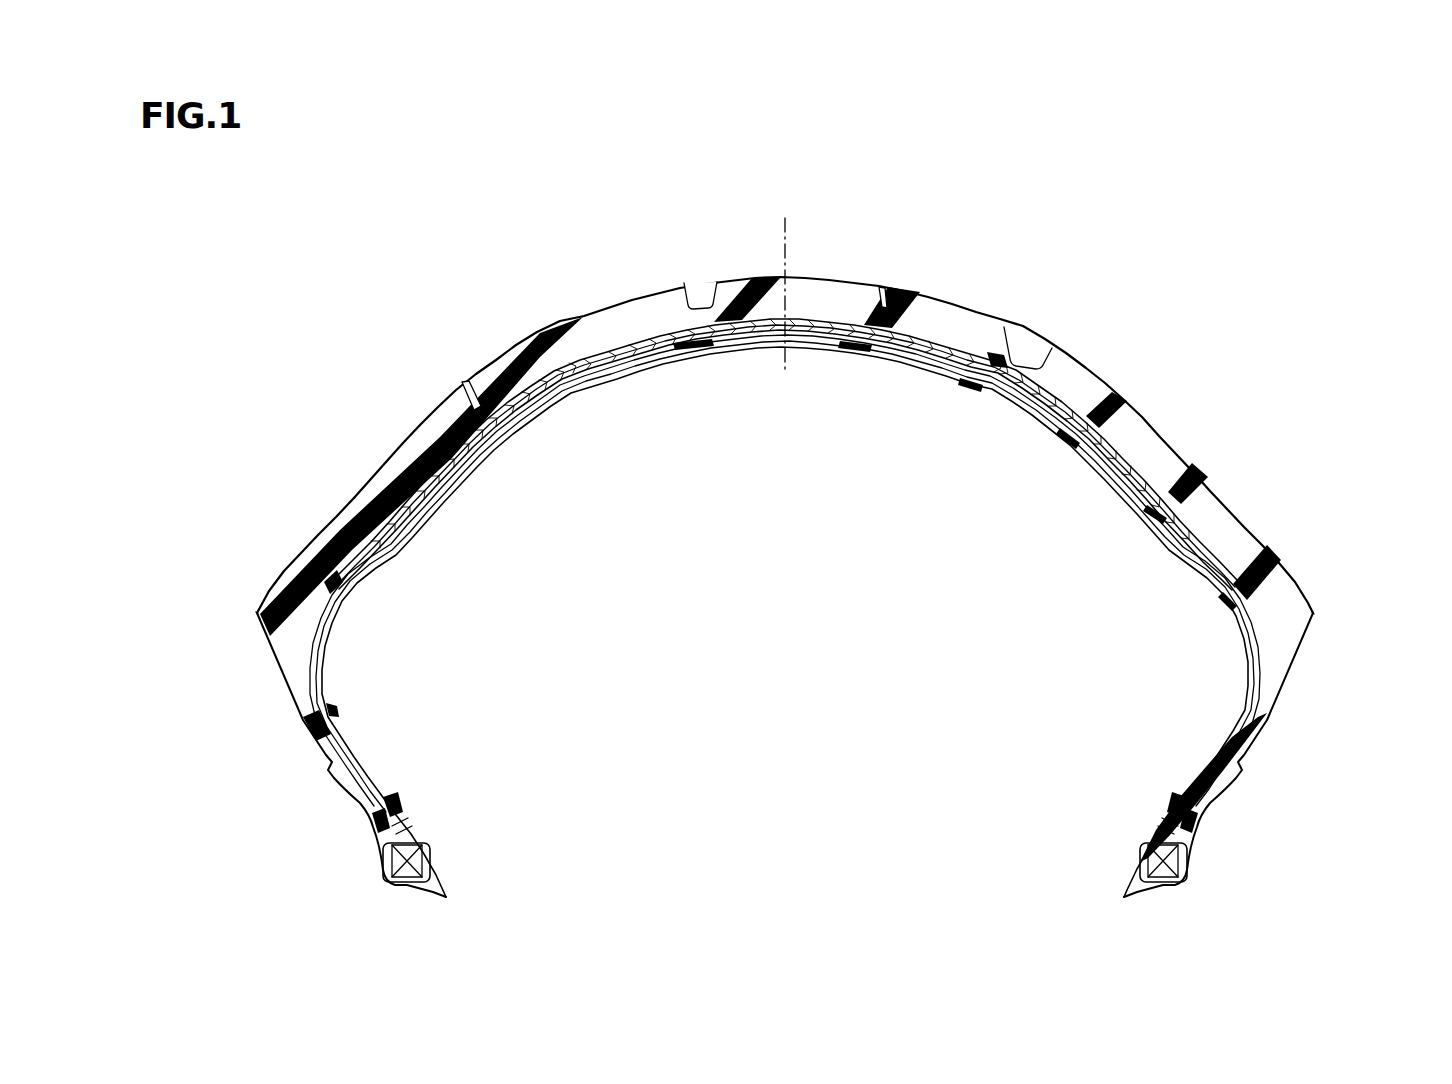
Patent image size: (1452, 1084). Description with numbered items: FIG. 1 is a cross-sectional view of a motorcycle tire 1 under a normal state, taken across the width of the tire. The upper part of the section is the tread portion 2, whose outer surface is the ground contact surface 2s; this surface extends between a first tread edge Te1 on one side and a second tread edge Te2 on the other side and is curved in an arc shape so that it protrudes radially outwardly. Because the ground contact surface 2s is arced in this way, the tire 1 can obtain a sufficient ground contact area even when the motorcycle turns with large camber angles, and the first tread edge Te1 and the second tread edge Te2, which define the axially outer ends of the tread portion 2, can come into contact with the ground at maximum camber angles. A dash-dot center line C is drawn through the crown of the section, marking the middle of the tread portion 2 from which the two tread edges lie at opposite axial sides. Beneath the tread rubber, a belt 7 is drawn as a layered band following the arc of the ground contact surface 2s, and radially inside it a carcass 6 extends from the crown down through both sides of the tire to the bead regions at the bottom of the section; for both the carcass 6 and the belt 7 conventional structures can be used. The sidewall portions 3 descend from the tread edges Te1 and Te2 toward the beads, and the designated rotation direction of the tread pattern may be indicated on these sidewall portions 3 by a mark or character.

The motorcycle tire 1 is at (934, 287).
The tread portion 2 is at (690, 281).
The ground contact surface 2s is at (1082, 363).
The sidewall portion 3 is at (299, 723).
The carcass 6 is at (1041, 414).
The belt 7 is at (825, 331).
The tire equator C is at (785, 277).
The first tread edge Te1 is at (1313, 613).
The second tread edge Te2 is at (257, 613).